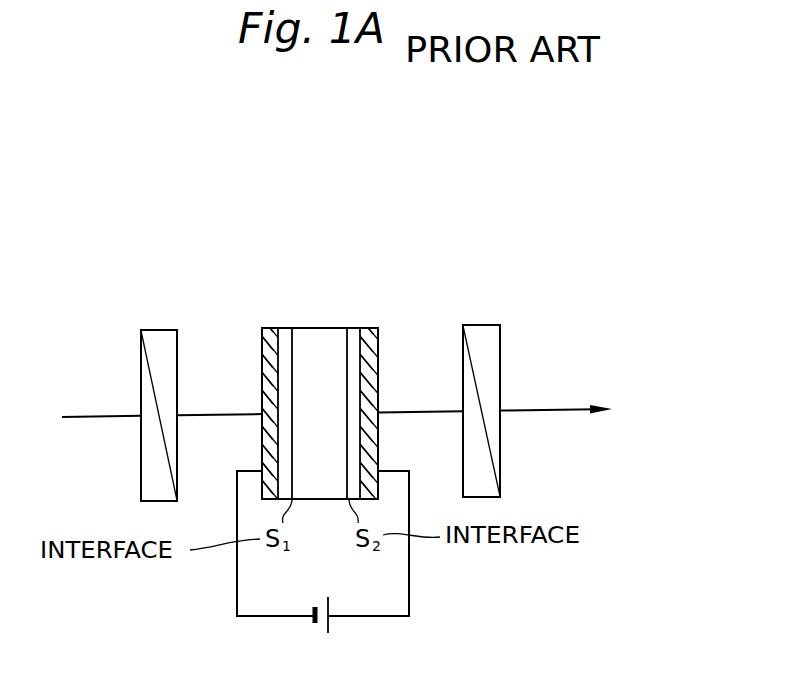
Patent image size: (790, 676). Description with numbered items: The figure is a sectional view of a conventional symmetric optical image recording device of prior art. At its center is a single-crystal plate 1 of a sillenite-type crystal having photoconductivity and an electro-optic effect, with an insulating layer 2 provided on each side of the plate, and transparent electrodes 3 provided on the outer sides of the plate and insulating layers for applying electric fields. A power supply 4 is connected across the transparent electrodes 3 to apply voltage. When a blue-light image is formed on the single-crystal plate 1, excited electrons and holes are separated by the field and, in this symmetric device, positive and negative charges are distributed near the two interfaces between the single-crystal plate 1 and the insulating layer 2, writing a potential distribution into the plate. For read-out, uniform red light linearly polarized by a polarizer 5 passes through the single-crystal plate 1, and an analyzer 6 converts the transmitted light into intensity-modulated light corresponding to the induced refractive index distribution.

The single-crystal plate 1 is at (319, 337).
The insulating layer 2 is at (352, 336).
The transparent electrodes 3 is at (373, 336).
The power supply 4 is at (387, 566).
The polarizer 5 is at (150, 333).
The analyzer 6 is at (478, 327).